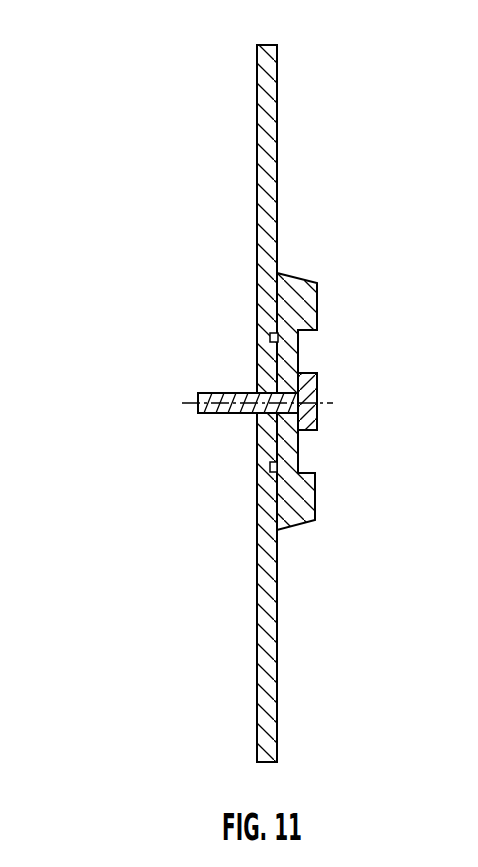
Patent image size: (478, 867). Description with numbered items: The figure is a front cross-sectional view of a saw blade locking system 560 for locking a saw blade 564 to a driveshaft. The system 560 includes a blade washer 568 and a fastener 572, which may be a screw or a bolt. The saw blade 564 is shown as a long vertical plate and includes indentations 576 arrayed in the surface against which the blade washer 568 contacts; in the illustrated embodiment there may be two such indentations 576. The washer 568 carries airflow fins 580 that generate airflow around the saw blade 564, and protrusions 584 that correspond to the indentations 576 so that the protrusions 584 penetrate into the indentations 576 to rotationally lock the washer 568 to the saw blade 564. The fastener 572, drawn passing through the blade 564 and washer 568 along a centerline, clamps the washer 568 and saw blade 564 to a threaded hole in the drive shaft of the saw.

The saw blade locking system 560 is at (288, 403).
The saw blade 564 is at (265, 218).
The airflow fins 580 is at (296, 292).
The protrusions 584 is at (277, 340).
The fastener 572 is at (310, 390).
The blade washer 568 is at (330, 448).
The indentations 576 is at (279, 467).